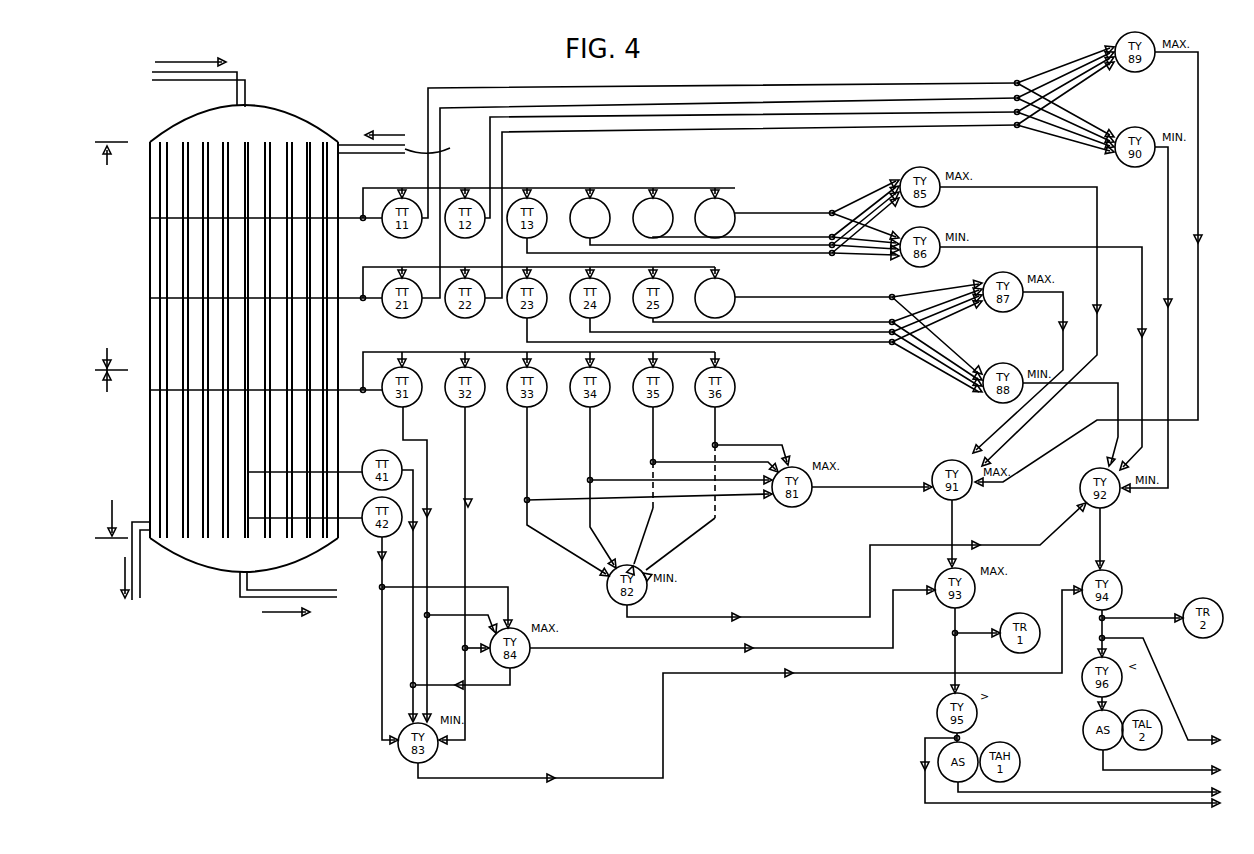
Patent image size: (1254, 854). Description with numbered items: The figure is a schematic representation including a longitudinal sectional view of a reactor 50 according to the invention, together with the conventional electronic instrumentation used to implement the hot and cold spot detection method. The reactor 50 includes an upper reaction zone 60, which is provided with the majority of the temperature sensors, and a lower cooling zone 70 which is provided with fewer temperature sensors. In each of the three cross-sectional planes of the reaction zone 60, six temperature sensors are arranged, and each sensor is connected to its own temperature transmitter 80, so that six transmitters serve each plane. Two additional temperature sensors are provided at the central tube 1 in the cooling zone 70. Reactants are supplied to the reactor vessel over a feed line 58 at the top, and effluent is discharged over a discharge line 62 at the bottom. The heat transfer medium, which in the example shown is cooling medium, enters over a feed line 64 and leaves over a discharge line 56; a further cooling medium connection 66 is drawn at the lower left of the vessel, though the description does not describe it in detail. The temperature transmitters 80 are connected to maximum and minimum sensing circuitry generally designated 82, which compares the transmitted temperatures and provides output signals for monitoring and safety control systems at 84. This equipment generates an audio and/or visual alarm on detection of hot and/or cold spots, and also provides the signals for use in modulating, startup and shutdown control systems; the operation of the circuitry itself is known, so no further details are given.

The central tube 1 is at (251, 158).
The reactor 50 is at (303, 108).
The discharge line 56 is at (342, 166).
The feed line 58 is at (190, 80).
The upper reaction zone 60 is at (150, 178).
The discharge line 62 is at (316, 596).
The feed line 64 is at (437, 140).
The cooling medium inlet 66 is at (141, 574).
The lower cooling zone 70 is at (148, 492).
The temperature transmitter 80 is at (721, 281).
The maximum and minimum sensing circuitry 82 is at (1208, 245).
The output signals for monitoring and safety control systems 84 is at (1188, 740).